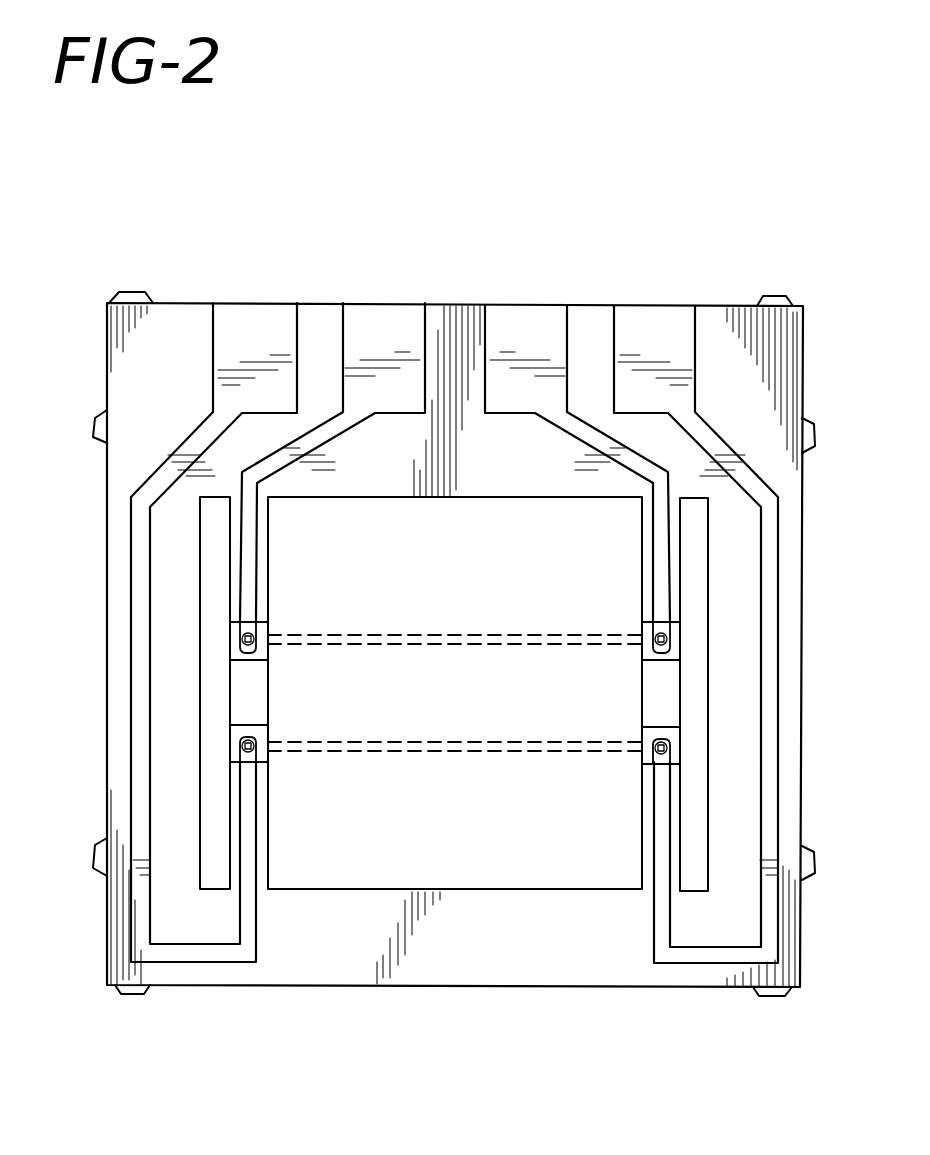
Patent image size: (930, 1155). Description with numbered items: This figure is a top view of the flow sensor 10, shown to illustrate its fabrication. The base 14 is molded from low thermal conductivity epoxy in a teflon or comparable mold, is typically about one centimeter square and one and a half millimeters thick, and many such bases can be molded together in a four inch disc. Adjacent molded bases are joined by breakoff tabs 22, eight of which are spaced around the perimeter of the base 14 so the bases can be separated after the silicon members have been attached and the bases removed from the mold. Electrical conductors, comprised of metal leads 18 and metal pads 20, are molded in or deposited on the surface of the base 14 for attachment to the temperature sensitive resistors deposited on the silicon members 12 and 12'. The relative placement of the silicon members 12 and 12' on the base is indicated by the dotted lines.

The flow sensor 10 is at (428, 217).
The silicon member 12 is at (455, 714).
The silicon member 12' is at (455, 481).
The epoxy base 14 is at (113, 718).
The metal leads 18 is at (197, 430).
The metal pads 20 is at (257, 317).
The breakoff tabs 22 is at (95, 422).